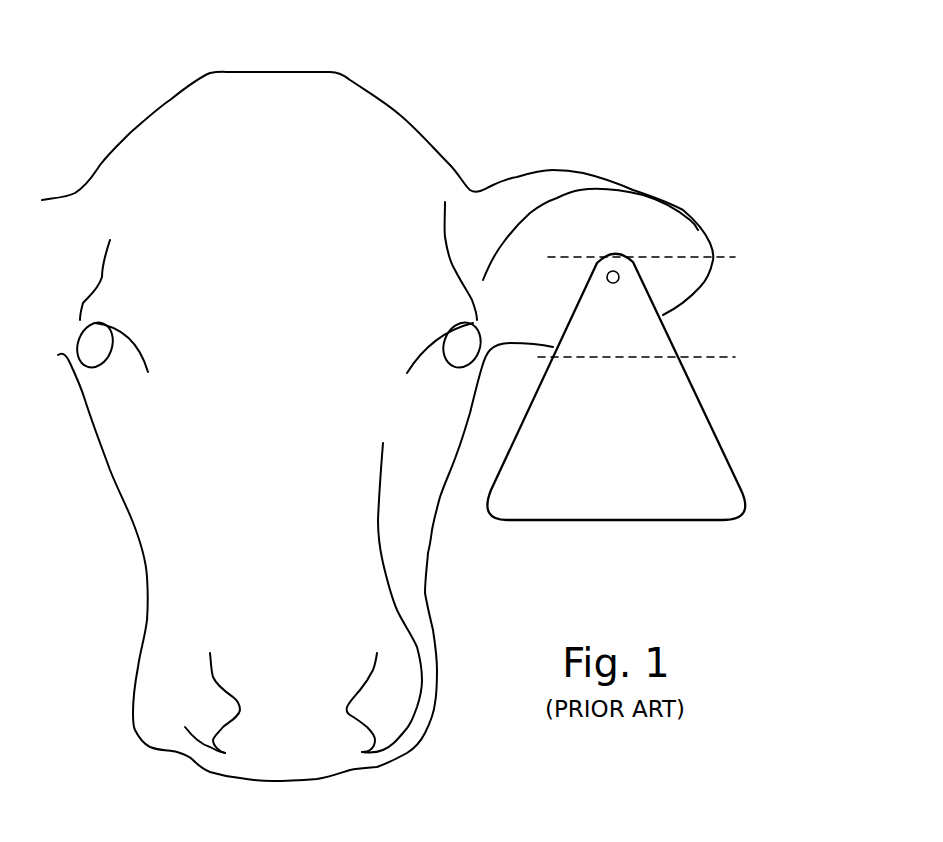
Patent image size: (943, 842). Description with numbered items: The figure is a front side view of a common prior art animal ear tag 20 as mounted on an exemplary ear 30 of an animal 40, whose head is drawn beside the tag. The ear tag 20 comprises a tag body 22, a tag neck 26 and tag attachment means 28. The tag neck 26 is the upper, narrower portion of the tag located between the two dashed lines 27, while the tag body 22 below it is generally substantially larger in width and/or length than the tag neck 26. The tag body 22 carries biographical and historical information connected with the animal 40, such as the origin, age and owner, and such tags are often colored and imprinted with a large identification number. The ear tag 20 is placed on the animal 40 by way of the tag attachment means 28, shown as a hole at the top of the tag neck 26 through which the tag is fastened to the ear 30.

The animal ear tag 20 is at (738, 507).
The tag body 22 is at (630, 465).
The tag neck 26 is at (630, 337).
The dashed lines 27 is at (654, 307).
The tag attachment means 28 is at (607, 272).
The ear 30 is at (665, 237).
The animal 40 is at (292, 427).